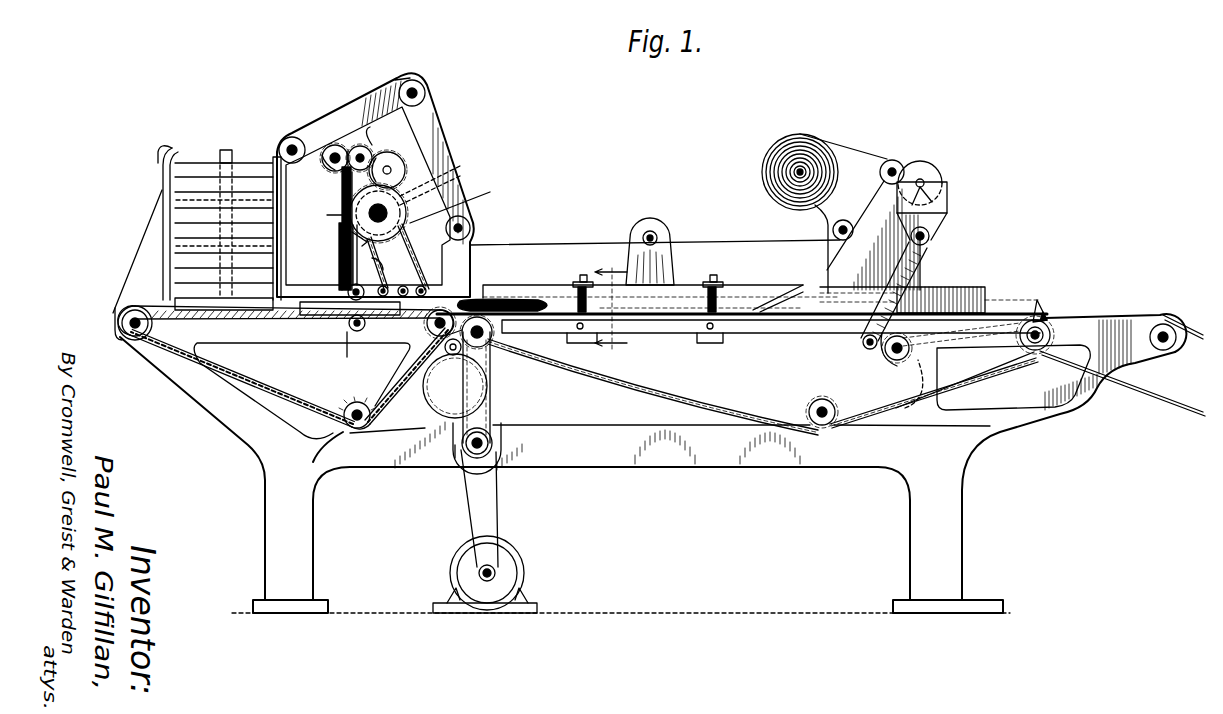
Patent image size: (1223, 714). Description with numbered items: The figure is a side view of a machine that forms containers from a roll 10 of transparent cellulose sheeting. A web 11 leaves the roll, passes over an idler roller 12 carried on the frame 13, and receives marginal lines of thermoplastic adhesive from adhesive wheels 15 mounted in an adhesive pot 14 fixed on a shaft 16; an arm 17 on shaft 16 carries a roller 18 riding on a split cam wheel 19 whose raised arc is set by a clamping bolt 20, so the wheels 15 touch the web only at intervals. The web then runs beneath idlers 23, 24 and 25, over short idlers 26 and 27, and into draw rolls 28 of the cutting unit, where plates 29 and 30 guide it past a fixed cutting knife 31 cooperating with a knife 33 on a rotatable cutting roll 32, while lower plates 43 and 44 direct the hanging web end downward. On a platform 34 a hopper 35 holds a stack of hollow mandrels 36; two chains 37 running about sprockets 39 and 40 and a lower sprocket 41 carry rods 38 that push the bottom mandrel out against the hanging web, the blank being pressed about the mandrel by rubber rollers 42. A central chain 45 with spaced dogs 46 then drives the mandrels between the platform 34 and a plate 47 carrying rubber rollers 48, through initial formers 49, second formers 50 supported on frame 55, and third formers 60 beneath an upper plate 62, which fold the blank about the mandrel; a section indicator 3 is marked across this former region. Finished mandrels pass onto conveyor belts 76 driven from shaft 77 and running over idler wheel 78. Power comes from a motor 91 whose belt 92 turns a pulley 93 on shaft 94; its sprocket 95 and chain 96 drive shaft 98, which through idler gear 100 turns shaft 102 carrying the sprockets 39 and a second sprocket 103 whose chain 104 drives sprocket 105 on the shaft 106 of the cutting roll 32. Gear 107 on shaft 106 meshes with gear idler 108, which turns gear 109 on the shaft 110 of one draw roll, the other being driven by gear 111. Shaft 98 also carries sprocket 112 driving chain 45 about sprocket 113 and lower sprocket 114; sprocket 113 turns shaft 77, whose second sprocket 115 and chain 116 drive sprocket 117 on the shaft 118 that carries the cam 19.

The section line 3- 3 is at (611, 308).
The roll 10 is at (800, 134).
The web 11 is at (550, 268).
The idler roller 12 is at (897, 160).
The frame 13 is at (853, 160).
The adhesive pot 14 is at (947, 192).
The adhesive wheels 15 is at (928, 165).
The shaft 16 is at (930, 237).
The arm 17 is at (926, 265).
The roller 18 is at (862, 342).
The cam wheel 19 is at (885, 350).
The clamping bolt 20 is at (892, 358).
The idler 23 is at (833, 228).
The idler 24 is at (664, 232).
The idler 25 is at (469, 228).
The idler 26 is at (420, 88).
The idler 27 is at (280, 142).
The draw rolls 28 is at (358, 145).
The plate 29 is at (323, 163).
The plate 30 is at (340, 183).
The fixed cutting knife 31 is at (327, 215).
The rotatable cutting roll 32 is at (389, 213).
The knife 33 is at (352, 232).
The platform 34 is at (236, 322).
The hopper 35 is at (163, 152).
The hollow open-ended mandrels 36 is at (198, 185).
The chains 37 is at (142, 345).
The rods 38 is at (210, 372).
The sprocket 39 is at (140, 310).
The sprocket 40 is at (432, 325).
The lower sprocket 41 is at (344, 408).
The rollers 42 is at (348, 290).
The lower plate 43 is at (352, 250).
The lower plate 44 is at (339, 262).
The central chain 45 is at (653, 387).
The dogs 46 is at (1012, 388).
The plate 47 is at (430, 289).
The rubber rollers 48 is at (386, 285).
The initial formers 49 is at (488, 300).
The second formers 50 is at (521, 288).
The frame 55 is at (584, 276).
The third formers 60 is at (856, 290).
The upper plate 62 is at (777, 292).
The conveyor belts 76 is at (1195, 320).
The shaft 77 is at (1045, 357).
The idler wheel 78 is at (1174, 347).
The motor 91 is at (516, 570).
The belt 92 is at (502, 500).
The pulley 93 is at (477, 455).
The shaft 94 is at (494, 443).
The sprocket 95 is at (456, 455).
The chain 96 is at (462, 398).
The shaft 98 is at (490, 356).
The idler gear 100 is at (440, 393).
The shaft 102 is at (445, 352).
The second sprocket 103 is at (445, 338).
The chain 104 is at (498, 234).
The sprocket 105 is at (405, 207).
The shaft 106 is at (350, 210).
The gear 107 is at (408, 214).
The gear idler 108 is at (398, 160).
The gear 109 is at (405, 82).
The shaft 110 is at (360, 146).
The gear 111 is at (328, 152).
The sprocket 112 is at (495, 338).
The sprocket 113 is at (1055, 333).
The lower sprocket 114 is at (832, 426).
The second sprocket 115 is at (985, 368).
The chain 116 is at (968, 383).
The sprocket 117 is at (912, 402).
The shaft 118 is at (893, 362).